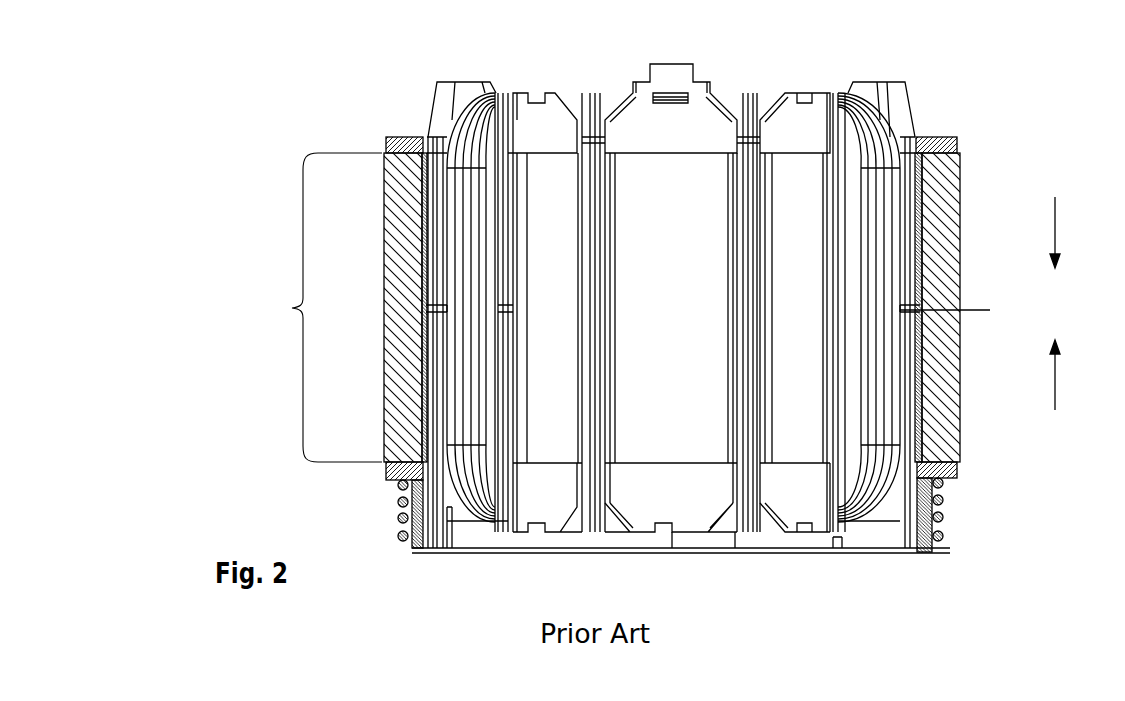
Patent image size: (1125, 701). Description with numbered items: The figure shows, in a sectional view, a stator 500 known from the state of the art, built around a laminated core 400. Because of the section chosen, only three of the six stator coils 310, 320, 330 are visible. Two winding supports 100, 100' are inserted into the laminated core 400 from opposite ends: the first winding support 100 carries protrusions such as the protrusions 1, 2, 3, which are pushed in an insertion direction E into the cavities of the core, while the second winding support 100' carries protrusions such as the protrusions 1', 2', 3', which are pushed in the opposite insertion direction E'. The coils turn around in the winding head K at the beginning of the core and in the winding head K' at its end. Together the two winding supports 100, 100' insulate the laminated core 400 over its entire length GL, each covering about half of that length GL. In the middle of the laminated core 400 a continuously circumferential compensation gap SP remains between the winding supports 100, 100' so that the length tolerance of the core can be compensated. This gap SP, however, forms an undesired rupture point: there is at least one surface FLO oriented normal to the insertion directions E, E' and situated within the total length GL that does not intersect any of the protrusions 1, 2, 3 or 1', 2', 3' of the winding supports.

The stator 500 is at (330, 114).
The protrusion of first winding support 1 is at (446, 306).
The protrusion of second winding support 1' is at (377, 342).
The stator coil 310 is at (497, 100).
The stator coil 320 is at (593, 130).
The protrusion of first winding support 2 is at (717, 278).
The protrusion of second winding support 2' is at (743, 353).
The stator coil 330 is at (842, 93).
The first winding support 100 is at (894, 177).
The second winding support 100' is at (921, 472).
The winding head K is at (912, 101).
The winding head K' is at (861, 592).
The protrusion of first winding support 3 is at (961, 297).
The protrusion of second winding support 3' is at (964, 507).
The compensation gap SP is at (918, 298).
The surface normal to the insertion direction FLO is at (973, 312).
The insertion direction E is at (1080, 232).
The insertion direction E' is at (1082, 375).
The total length of the laminated core GL is at (320, 307).
The laminated core 400 is at (543, 432).